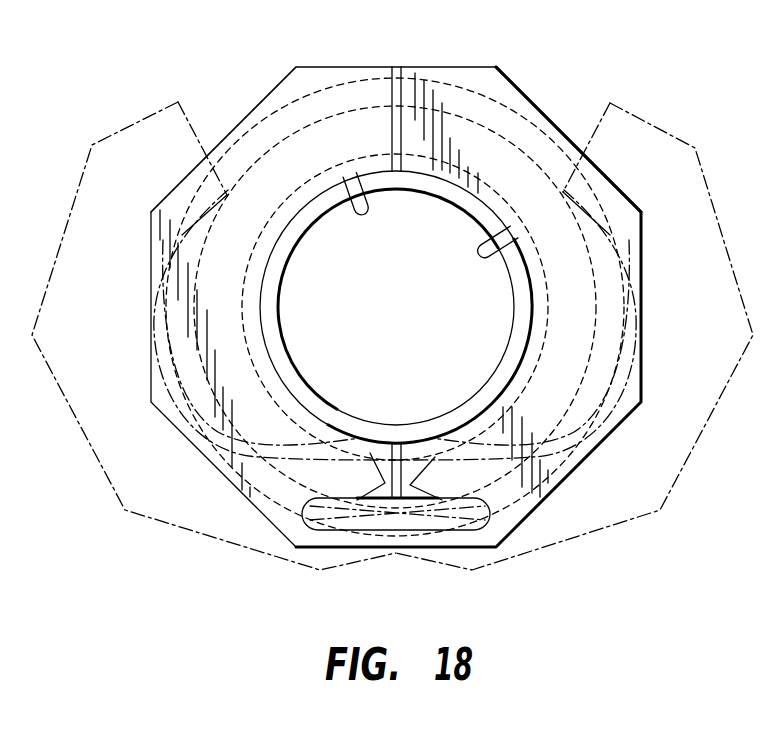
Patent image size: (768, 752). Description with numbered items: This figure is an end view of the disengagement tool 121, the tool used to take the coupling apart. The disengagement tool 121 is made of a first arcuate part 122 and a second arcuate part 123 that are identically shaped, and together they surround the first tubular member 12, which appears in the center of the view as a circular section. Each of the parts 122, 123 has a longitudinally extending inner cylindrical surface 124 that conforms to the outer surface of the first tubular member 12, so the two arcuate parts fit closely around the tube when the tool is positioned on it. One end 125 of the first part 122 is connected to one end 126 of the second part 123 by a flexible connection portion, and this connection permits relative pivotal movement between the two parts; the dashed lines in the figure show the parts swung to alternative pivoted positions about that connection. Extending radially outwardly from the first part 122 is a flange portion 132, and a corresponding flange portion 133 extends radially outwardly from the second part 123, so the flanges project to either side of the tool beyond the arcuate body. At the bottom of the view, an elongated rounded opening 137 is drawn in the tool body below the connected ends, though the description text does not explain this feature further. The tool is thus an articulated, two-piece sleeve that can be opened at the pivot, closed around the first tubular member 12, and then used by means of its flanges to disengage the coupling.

The first tubular member 12 is at (502, 365).
The disengagement tool 121 is at (515, 83).
The first arcuate part 122 is at (252, 110).
The second arcuate part 123 is at (555, 113).
The inner cylindrical surface 124 is at (350, 185).
The one end of the first part 125 is at (368, 441).
The one end of the second part 126 is at (408, 441).
The flange portion 132 is at (152, 226).
The flange portion 133 is at (640, 236).
The slot 137 is at (396, 548).